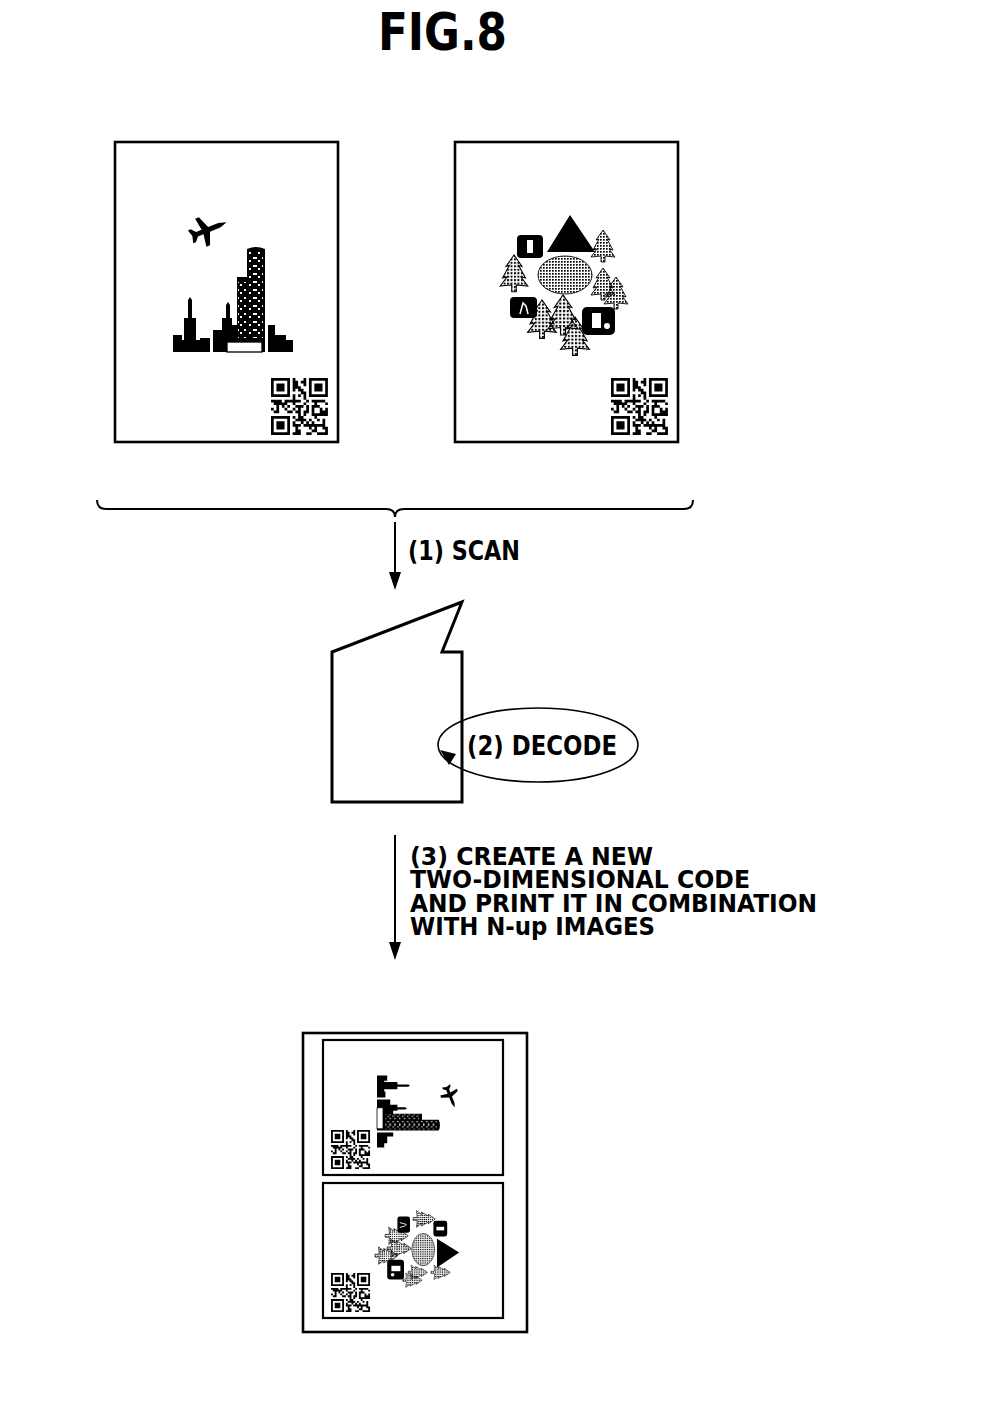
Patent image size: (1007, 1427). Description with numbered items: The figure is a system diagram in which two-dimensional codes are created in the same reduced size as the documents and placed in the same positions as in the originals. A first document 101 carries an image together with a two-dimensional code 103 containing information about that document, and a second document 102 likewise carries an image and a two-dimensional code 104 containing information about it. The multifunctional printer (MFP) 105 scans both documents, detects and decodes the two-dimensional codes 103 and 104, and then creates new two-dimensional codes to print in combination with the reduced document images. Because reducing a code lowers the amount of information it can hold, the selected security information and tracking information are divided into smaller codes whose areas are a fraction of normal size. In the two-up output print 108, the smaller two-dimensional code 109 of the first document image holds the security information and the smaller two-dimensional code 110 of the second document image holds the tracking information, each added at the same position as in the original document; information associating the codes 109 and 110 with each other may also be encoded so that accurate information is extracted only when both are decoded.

The document 101 is at (226, 287).
The document 102 is at (566, 287).
The two-dimensional code 103 is at (305, 442).
The two-dimensional code 104 is at (645, 442).
The multifunctional printer (MFP) 105 is at (462, 673).
The output print 108 is at (382, 1154).
The two-dimensional code 109 is at (331, 1152).
The two-dimensional code 110 is at (331, 1300).